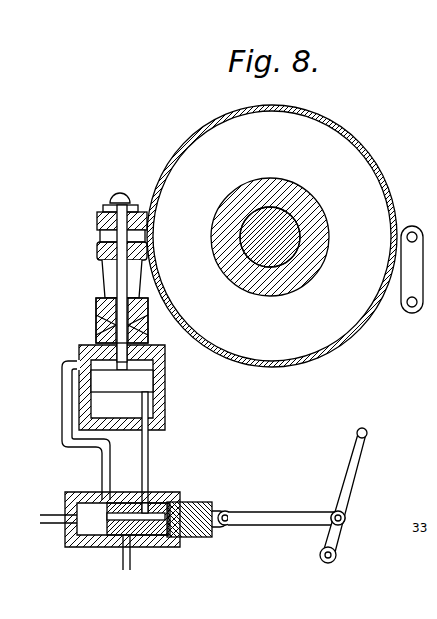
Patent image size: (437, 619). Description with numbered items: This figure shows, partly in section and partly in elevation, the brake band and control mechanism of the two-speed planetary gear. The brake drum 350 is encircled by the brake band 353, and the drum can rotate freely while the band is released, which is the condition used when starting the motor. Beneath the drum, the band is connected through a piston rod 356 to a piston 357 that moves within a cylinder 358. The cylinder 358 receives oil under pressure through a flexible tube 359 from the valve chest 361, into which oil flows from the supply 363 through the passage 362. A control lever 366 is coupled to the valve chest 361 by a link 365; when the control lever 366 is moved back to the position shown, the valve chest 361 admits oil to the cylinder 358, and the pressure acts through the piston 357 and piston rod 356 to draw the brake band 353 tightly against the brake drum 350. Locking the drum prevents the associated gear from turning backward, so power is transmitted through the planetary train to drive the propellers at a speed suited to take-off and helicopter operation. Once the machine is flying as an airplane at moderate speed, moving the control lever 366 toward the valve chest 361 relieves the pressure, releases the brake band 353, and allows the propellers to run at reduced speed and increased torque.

The brake drum 350 is at (352, 135).
The brake band 353 is at (183, 138).
The piston rod 356 is at (113, 285).
The piston 357 is at (165, 381).
The cylinder 358 is at (166, 406).
The flexible tube 359 is at (148, 447).
The valve chest 361 is at (162, 492).
The oil passage 362 is at (215, 500).
The oil pressure supply 363 is at (130, 560).
The link 365 is at (258, 512).
The control lever 366 is at (355, 445).